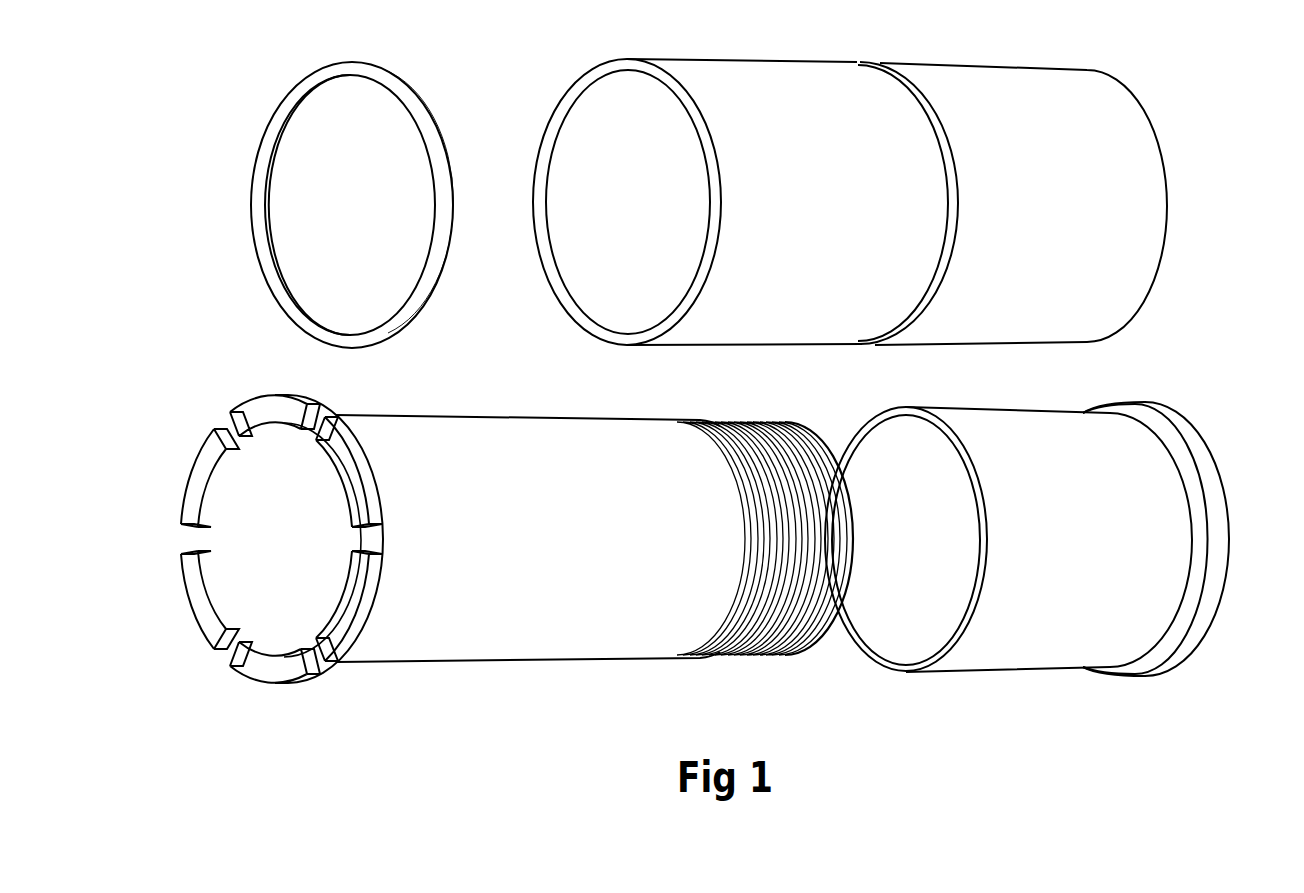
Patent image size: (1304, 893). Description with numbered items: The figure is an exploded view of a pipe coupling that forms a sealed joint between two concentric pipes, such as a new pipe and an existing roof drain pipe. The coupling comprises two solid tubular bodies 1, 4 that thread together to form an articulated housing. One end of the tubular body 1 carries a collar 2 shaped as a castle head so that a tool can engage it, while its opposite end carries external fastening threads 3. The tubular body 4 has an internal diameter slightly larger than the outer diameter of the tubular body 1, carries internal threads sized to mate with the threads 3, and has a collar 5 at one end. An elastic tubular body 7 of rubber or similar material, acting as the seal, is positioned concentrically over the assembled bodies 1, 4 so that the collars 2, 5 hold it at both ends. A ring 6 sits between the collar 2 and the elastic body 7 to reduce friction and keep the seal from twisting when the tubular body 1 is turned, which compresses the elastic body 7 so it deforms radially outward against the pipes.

The tubular body 1 is at (513, 410).
The collar 2 is at (333, 677).
The fastening threads 3 is at (719, 663).
The tubular body 4 is at (1040, 672).
The collar 5 is at (1235, 534).
The ring 6 is at (402, 65).
The elastic tubular body 7 is at (709, 52).